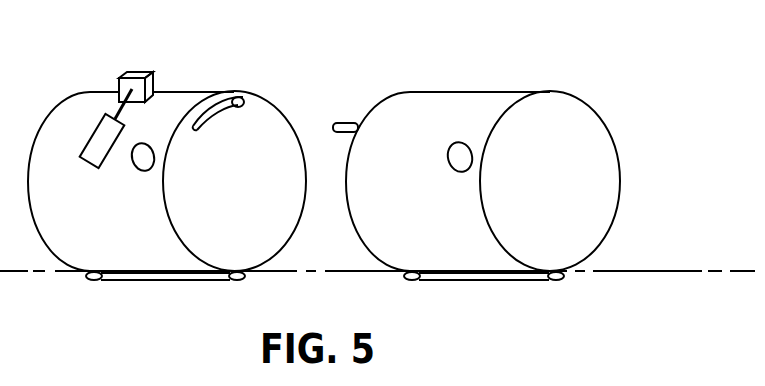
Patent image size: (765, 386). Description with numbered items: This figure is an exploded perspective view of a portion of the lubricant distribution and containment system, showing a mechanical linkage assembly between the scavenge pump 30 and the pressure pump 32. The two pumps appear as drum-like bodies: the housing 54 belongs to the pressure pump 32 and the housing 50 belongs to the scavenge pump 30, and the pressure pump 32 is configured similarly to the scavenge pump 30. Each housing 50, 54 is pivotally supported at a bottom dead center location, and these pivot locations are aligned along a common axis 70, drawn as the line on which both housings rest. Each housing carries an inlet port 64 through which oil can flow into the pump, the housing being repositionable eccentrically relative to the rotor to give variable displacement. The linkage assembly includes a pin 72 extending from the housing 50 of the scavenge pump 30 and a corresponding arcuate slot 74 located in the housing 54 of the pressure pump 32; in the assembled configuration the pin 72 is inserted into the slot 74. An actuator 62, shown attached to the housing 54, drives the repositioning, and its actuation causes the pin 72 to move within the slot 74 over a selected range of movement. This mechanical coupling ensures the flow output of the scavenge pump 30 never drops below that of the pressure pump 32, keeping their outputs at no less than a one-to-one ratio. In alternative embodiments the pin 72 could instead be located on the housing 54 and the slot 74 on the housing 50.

The scavenge pump 30 is at (486, 80).
The pressure pump 32 is at (189, 80).
The housing 50 is at (582, 120).
The housing 54 is at (267, 122).
The actuator 62 is at (102, 137).
The inlet port 64 is at (150, 153).
The common axis 70 is at (637, 271).
The pin 72 is at (356, 124).
The arcuate slot 74 is at (236, 97).